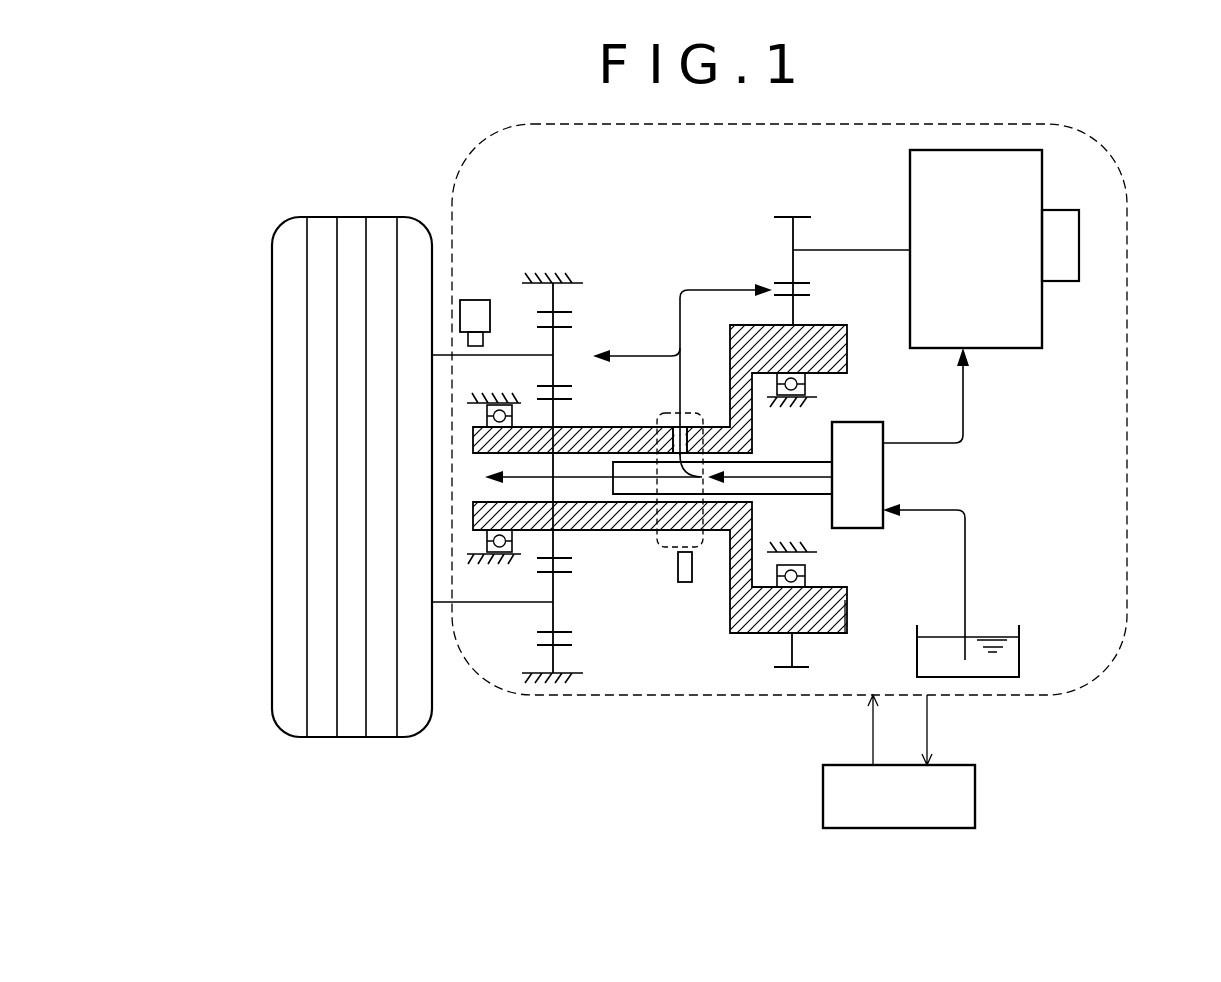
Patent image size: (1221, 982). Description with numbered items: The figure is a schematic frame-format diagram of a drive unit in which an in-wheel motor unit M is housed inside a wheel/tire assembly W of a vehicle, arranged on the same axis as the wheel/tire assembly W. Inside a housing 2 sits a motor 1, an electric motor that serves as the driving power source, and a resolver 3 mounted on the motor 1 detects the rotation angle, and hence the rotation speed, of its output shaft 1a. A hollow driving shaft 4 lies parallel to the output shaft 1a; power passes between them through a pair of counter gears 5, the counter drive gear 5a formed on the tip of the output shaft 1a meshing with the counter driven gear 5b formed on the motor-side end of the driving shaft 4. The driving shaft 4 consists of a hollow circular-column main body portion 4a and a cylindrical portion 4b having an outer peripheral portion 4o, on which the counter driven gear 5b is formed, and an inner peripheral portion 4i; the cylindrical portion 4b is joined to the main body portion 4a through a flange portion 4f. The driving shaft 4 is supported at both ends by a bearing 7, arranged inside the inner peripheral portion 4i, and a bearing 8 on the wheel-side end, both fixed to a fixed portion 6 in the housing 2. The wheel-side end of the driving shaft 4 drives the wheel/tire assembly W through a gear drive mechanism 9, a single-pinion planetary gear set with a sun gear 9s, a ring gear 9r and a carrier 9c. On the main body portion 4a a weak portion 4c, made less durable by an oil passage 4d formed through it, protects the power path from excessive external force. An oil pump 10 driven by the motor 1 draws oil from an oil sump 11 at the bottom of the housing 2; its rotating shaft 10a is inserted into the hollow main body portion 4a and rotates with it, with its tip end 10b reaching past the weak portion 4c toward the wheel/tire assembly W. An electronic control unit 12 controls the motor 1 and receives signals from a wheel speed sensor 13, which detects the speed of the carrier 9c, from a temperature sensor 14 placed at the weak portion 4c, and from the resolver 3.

The motor 1 is at (1035, 190).
The output shaft 1a is at (863, 250).
The housing 2 is at (1128, 470).
The resolver 3 is at (1074, 252).
The driving shaft 4 is at (688, 508).
The main body portion 4a is at (600, 520).
The cylindrical portion 4b is at (752, 630).
The weak portion 4c is at (658, 548).
The oil passage 4d is at (675, 427).
The flange portion 4f is at (734, 380).
The inner peripheral portion 4i is at (830, 585).
The outer peripheral portion 4o is at (827, 636).
The counter gears 5 is at (742, 224).
The counter drive gear 5a is at (800, 216).
The counter driven gear 5b is at (812, 292).
The fixed portion 6 is at (550, 272).
The bearing 7 is at (806, 390).
The bearing 8 is at (487, 412).
The gear drive mechanism 9 is at (607, 313).
The carrier 9c is at (500, 604).
The ring gear 9r is at (537, 322).
The sun gear 9s is at (572, 398).
The oil pump 10 is at (870, 437).
The rotating shaft 10a is at (777, 470).
The tip end 10b is at (618, 474).
The oil sump 11 is at (1015, 657).
The electronic control unit 12 is at (968, 793).
The wheel speed sensor 13 is at (477, 300).
The temperature sensor 14 is at (690, 574).
The wheel/tire assembly W is at (288, 189).
The in-wheel motor unit M is at (603, 719).